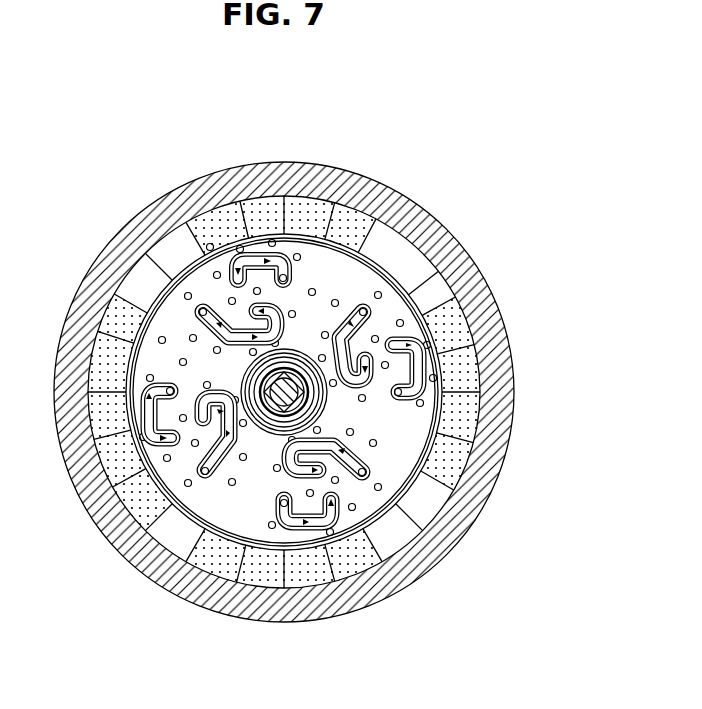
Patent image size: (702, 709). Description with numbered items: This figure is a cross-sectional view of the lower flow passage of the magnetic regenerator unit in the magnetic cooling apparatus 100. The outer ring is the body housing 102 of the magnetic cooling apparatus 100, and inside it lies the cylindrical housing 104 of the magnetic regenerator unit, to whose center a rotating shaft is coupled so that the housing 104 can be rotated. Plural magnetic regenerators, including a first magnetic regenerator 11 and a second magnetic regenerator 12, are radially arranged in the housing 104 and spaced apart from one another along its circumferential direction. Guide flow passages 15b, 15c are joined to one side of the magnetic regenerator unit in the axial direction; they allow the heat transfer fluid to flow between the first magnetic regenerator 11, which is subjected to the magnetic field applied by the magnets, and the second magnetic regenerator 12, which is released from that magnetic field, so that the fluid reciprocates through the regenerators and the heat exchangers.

The magnetic cooling apparatus 100 is at (96, 112).
The body housing 102 is at (514, 381).
The first magnetic regenerator 11 is at (283, 277).
The second magnetic regenerator 12 is at (365, 312).
The guide flow passage 15b is at (255, 262).
The guide flow passage 15c is at (338, 343).
The housing 104 is at (270, 414).